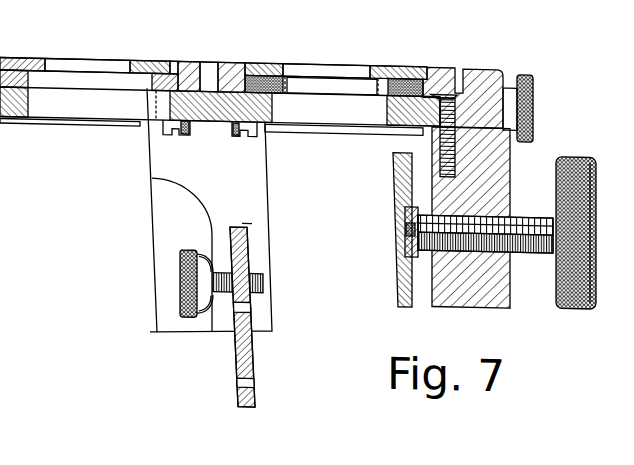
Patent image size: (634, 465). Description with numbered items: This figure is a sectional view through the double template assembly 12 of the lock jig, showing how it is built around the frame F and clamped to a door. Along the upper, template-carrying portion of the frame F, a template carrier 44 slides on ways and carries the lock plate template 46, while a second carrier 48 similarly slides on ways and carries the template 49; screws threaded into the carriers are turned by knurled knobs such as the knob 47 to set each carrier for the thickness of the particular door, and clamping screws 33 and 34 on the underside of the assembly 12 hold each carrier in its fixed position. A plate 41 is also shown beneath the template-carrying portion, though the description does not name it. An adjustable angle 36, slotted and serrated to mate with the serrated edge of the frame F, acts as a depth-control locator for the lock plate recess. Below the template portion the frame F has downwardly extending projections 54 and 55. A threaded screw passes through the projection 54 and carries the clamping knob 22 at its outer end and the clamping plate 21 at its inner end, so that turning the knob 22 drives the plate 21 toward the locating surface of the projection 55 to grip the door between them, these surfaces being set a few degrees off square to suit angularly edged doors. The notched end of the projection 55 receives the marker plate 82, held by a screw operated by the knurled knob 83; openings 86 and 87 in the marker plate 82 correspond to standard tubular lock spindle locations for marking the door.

The double template assembly 12 is at (563, 48).
The clamping plate 21 is at (398, 266).
The clamping knob 22 is at (578, 144).
The clamping screw 33 is at (253, 131).
The clamping screw 34 is at (183, 131).
The adjustable angle 36 is at (310, 121).
The base plate 41 is at (78, 123).
The template carrier 44 is at (233, 61).
The template 46 is at (388, 58).
The knurled knob 47 is at (533, 108).
The carrier 48 is at (178, 54).
The template 49 is at (36, 57).
The projection 54 is at (480, 297).
The projection 55 is at (266, 211).
The marker plate 82 is at (247, 315).
The knurled knob 83 is at (180, 269).
The opening 86 is at (253, 376).
The opening 87 is at (250, 302).
The frame F is at (478, 62).